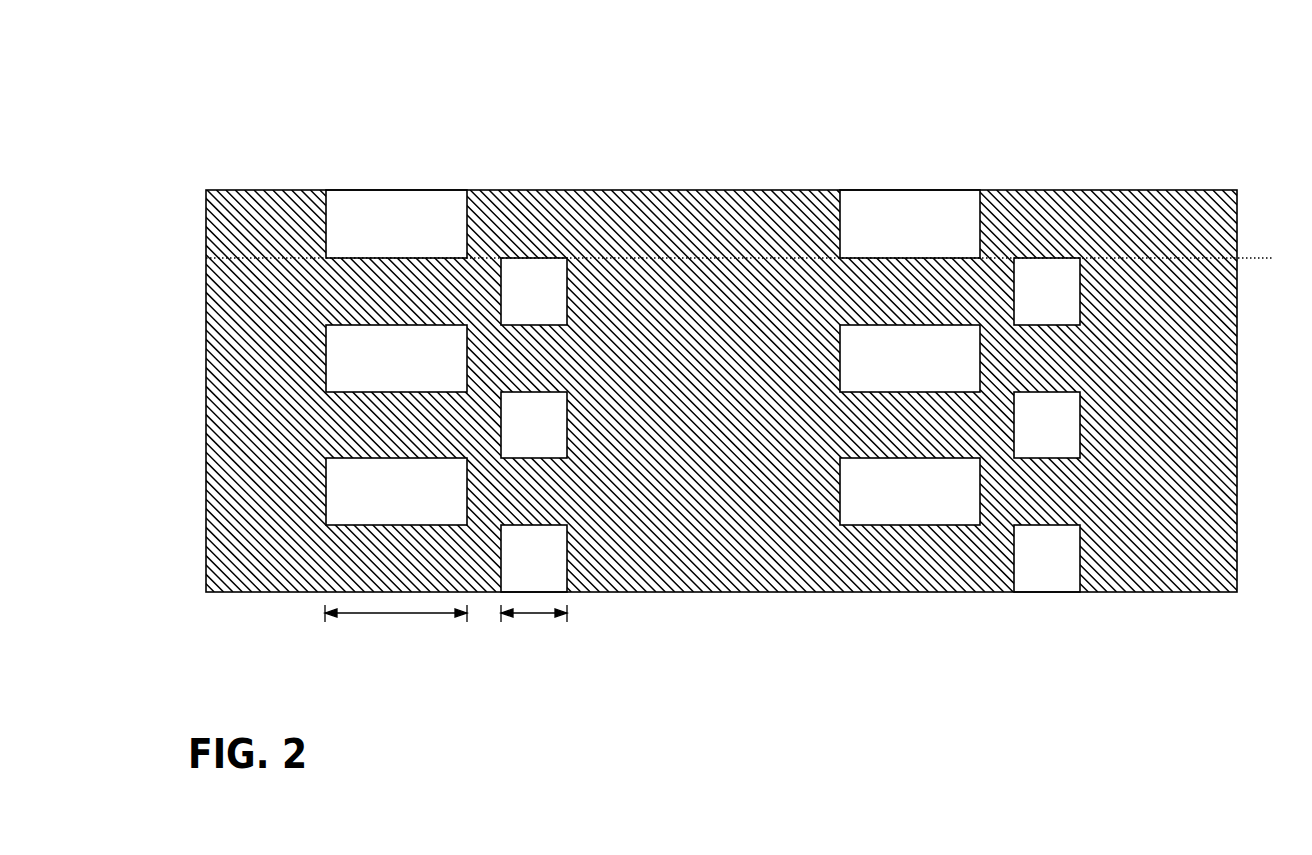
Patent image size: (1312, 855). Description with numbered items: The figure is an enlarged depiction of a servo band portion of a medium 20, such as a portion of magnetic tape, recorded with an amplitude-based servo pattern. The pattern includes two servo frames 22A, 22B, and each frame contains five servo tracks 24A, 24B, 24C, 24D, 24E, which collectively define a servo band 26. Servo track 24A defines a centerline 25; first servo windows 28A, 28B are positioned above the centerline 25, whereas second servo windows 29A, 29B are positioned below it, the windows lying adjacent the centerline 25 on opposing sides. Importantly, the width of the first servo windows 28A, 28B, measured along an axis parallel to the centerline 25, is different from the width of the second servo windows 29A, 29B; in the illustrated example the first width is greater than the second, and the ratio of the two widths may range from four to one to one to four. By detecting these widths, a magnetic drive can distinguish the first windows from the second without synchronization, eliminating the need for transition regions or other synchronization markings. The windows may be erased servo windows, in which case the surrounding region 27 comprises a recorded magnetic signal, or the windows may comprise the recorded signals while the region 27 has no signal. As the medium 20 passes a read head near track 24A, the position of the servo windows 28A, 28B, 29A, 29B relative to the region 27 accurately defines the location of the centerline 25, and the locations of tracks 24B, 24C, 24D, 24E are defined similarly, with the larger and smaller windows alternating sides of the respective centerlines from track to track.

The medium 20 is at (656, 383).
The servo frame 22A is at (464, 321).
The servo frame 22B is at (980, 321).
The servo track 24A is at (196, 258).
The servo track 24B is at (196, 323).
The servo track 24C is at (196, 390).
The servo track 24D is at (196, 458).
The servo track 24E is at (676, 525).
The centerline 25 is at (1257, 258).
The servo band 26 is at (645, 391).
The region 27 is at (660, 540).
The first servo window 28A is at (360, 240).
The first servo window 28B is at (890, 227).
The second servo window 29A is at (579, 360).
The second servo window 29B is at (1095, 360).